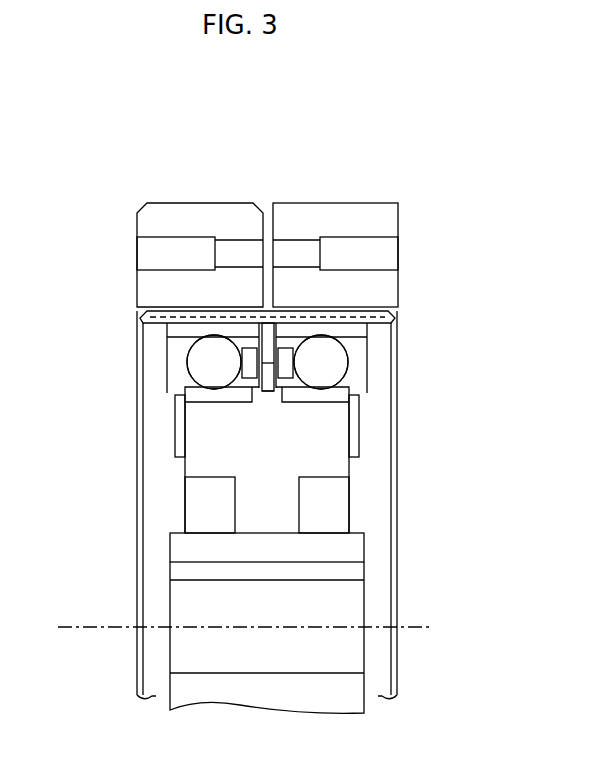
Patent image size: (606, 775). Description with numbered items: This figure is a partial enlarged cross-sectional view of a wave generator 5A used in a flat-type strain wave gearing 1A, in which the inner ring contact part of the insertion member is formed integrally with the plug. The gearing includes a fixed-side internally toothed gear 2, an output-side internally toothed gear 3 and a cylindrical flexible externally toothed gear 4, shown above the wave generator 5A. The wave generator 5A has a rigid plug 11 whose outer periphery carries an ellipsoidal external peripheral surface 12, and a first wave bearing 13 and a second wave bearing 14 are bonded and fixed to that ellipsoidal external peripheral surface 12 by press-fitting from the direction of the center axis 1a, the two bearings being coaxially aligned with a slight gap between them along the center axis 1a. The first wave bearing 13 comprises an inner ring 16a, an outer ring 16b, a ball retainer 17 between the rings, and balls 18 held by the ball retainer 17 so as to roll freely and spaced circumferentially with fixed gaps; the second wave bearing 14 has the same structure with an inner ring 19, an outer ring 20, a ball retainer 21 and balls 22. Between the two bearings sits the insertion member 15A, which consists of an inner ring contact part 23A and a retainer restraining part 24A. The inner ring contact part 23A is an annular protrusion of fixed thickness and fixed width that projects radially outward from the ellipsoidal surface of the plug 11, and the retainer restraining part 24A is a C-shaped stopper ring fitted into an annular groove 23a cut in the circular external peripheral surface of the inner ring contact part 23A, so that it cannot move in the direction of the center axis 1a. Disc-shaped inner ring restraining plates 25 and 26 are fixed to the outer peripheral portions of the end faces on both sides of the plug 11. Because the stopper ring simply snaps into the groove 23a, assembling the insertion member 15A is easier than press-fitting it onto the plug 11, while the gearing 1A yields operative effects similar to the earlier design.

The flat-type strain wave gearing 1A is at (442, 185).
The center axis 1a is at (431, 632).
The fixed-side internally toothed gear 2 is at (333, 203).
The output-side internally toothed gear 3 is at (180, 203).
The flexible externally toothed gear 4 is at (261, 311).
The wave generator 5A is at (375, 574).
The plug 11 is at (367, 545).
The ellipsoidal external peripheral surface 12 is at (301, 395).
The first wave bearing 13 is at (469, 283).
The second wave bearing 14 is at (81, 283).
The insertion member 15A is at (67, 455).
The inner ring 16a is at (368, 393).
The outer ring 16b is at (360, 333).
The ball retainer 17 is at (287, 362).
The balls 18 is at (336, 370).
The inner ring 19 is at (178, 393).
The outer ring 20 is at (178, 335).
The ball retainer 21 is at (243, 362).
The balls 22 is at (202, 370).
The inner ring contact part 23A is at (280, 390).
The annular groove 23a is at (269, 391).
The retainer restraining part 24A is at (253, 386).
The inner ring restraining plate 25 is at (358, 419).
The inner ring restraining plate 26 is at (177, 419).